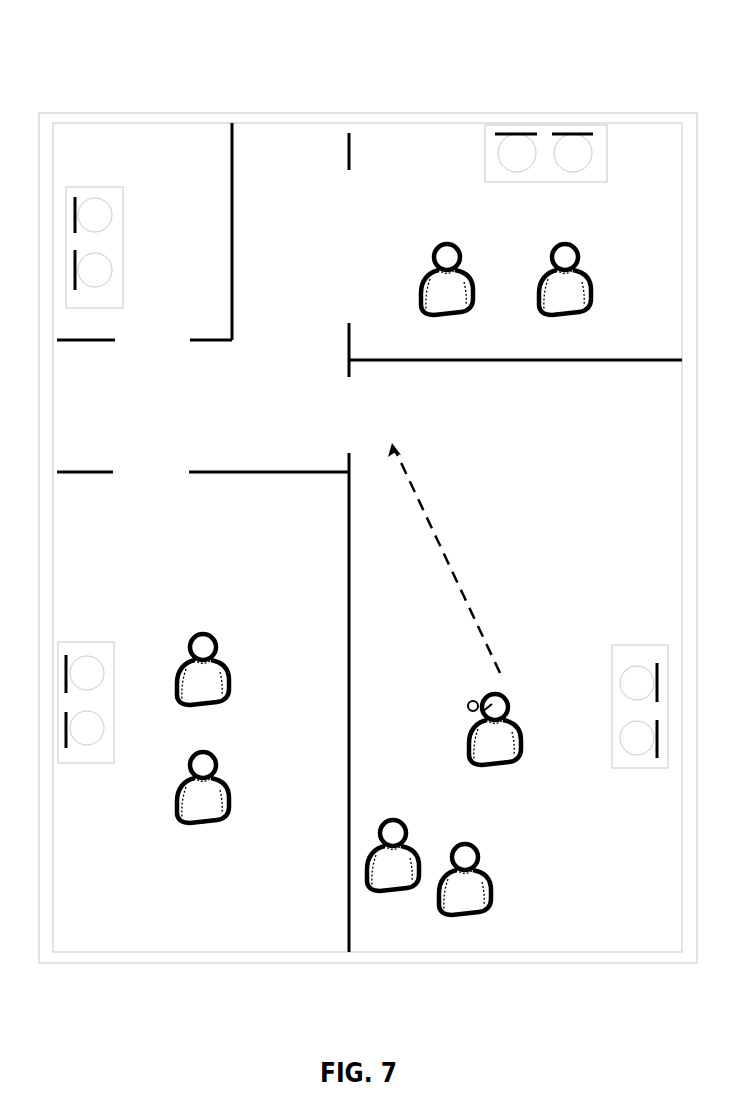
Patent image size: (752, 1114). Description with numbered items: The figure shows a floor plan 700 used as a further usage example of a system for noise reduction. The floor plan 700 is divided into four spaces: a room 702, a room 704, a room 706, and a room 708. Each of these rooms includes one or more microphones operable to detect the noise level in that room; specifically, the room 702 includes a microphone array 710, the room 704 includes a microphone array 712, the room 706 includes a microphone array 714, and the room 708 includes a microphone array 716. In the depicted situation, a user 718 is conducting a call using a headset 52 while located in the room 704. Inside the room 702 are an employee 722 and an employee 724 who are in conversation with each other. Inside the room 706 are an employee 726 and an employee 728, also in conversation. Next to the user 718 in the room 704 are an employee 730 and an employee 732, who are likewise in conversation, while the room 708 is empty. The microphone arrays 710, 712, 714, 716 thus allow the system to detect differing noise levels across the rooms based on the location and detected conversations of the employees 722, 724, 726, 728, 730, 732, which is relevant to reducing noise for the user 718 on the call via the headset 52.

The floor plan 700 is at (375, 42).
The room 702 is at (515, 255).
The room 704 is at (512, 702).
The room 706 is at (203, 487).
The room 708 is at (144, 231).
The microphone array 710 is at (485, 152).
The microphone array 712 is at (640, 767).
The microphone array 714 is at (85, 763).
The microphone array 716 is at (122, 278).
The user 718 is at (507, 695).
The headset 52 is at (472, 702).
The employee 722 is at (575, 243).
The employee 724 is at (458, 243).
The employee 726 is at (213, 637).
The employee 728 is at (213, 755).
The employee 730 is at (403, 823).
The employee 732 is at (475, 847).